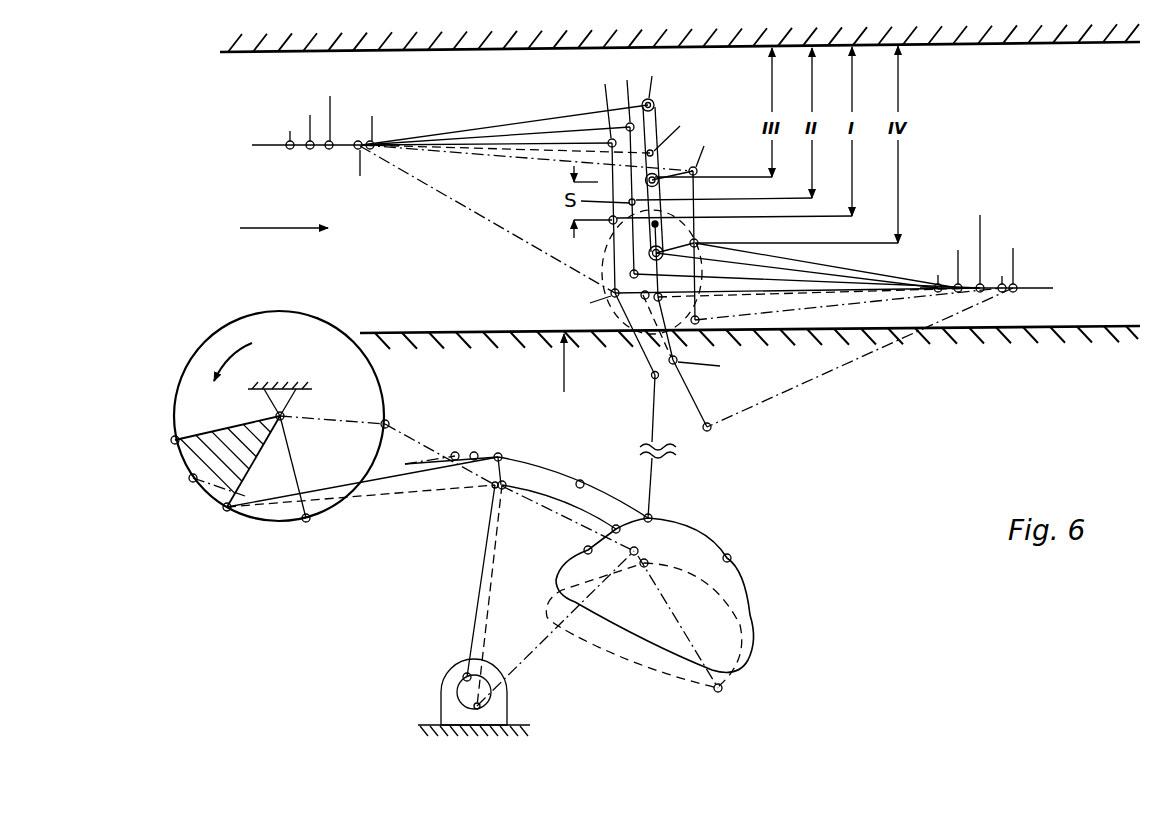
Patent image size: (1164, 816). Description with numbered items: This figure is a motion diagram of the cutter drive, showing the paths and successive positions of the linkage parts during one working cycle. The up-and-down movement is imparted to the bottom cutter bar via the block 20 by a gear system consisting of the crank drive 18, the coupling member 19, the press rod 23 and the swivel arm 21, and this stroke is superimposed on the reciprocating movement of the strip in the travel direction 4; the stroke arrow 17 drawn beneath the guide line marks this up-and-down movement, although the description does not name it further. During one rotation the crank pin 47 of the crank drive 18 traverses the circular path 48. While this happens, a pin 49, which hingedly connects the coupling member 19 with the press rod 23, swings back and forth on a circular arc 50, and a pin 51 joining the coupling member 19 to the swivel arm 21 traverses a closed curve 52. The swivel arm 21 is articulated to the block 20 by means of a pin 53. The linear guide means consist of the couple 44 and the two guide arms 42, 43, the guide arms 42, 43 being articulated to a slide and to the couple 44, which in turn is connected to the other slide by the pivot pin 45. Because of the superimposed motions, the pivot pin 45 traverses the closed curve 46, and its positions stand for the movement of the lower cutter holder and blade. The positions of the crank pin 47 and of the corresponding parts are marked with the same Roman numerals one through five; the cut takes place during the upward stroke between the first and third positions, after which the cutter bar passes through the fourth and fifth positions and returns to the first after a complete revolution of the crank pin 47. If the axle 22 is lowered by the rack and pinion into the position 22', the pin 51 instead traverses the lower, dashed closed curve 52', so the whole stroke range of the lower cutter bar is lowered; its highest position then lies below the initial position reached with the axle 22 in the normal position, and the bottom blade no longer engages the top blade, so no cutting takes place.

The travel direction 4 is at (284, 215).
The stroke arrow of pressing bar 17 is at (564, 372).
The crank drive 18 is at (228, 425).
The coupling member 19 is at (397, 477).
The block 20 is at (650, 362).
The swivel arm 21 is at (656, 425).
The axle 22 is at (448, 692).
The lowered axle position 22' is at (530, 720).
The press rod 23 is at (480, 577).
The guide arm 42 is at (520, 122).
The guide arm 43 is at (900, 282).
The couple 44 is at (656, 127).
The pivot pin 45 is at (658, 176).
The closed curve 46 is at (606, 252).
The crank pin 47 is at (172, 438).
The circular path 48 is at (197, 353).
The pin 49 is at (498, 453).
The circular arc 50 is at (537, 466).
The pin 51 is at (652, 518).
The closed curve 52 is at (664, 612).
The closed curve 52' is at (643, 647).
The pin 53 is at (653, 377).